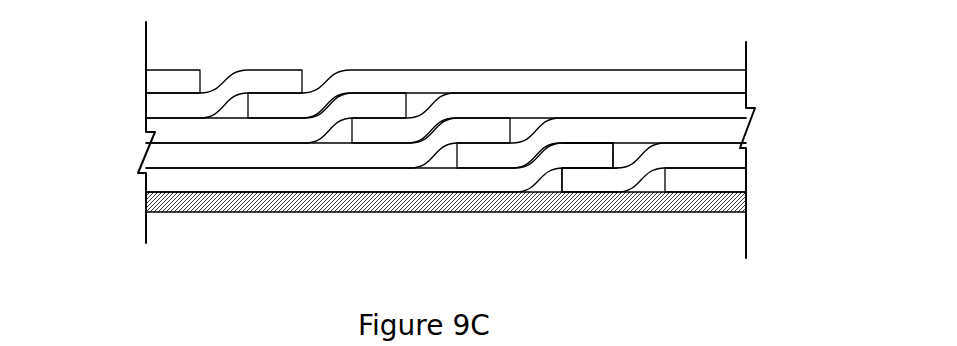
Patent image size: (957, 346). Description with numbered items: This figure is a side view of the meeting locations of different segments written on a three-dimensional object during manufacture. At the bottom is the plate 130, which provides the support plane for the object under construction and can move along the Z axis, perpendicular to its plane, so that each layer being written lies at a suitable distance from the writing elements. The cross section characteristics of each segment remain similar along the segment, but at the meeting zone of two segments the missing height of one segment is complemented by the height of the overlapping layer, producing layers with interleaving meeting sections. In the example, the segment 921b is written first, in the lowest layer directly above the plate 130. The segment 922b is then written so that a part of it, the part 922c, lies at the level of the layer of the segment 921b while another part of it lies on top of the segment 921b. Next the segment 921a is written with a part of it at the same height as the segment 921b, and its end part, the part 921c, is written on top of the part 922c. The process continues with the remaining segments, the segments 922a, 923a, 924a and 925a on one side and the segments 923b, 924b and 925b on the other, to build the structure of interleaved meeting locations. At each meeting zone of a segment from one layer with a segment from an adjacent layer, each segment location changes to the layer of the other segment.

The segment 925a is at (167, 82).
The segment 924a is at (168, 110).
The segment 923a is at (163, 130).
The segment 922a is at (158, 153).
The segment 921a is at (158, 175).
The segment 925b is at (718, 80).
The segment 924b is at (723, 103).
The segment 923b is at (718, 128).
The segment 922b is at (722, 155).
The segment 921b is at (730, 177).
The end part of segment 921c is at (590, 157).
The part of segment 922c is at (590, 178).
The plate 130 is at (197, 205).